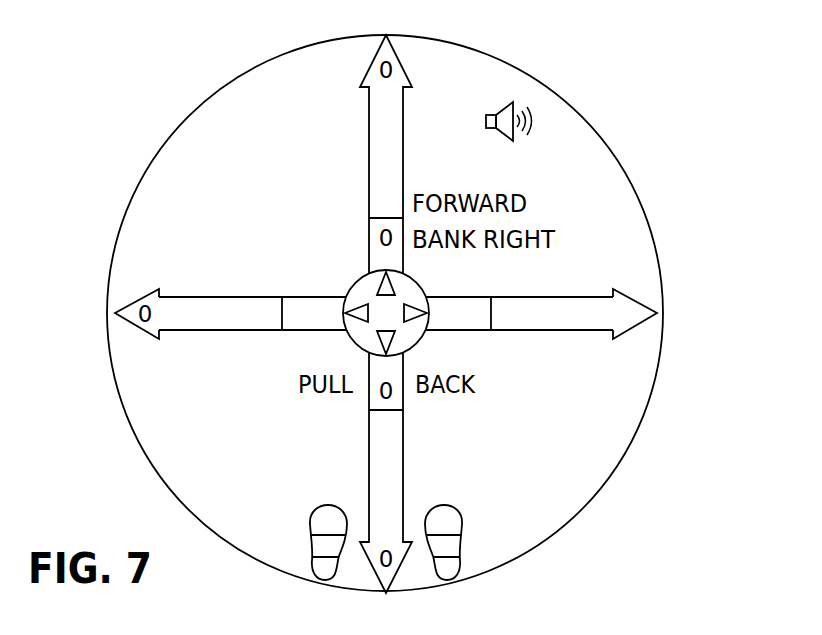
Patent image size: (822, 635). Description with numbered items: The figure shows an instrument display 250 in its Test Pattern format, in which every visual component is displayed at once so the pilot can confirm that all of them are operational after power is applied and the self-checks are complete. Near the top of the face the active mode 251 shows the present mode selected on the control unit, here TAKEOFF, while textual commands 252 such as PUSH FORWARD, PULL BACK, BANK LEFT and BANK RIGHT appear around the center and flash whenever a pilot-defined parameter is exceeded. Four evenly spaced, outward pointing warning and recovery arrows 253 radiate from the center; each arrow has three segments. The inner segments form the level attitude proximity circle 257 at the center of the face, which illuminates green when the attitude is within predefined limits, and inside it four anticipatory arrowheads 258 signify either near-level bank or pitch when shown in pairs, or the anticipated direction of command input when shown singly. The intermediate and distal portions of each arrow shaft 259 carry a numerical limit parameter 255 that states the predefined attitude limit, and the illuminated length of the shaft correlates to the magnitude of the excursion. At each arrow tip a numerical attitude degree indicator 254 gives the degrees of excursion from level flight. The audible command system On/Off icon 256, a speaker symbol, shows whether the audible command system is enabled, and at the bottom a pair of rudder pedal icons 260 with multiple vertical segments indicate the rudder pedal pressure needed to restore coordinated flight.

The instrument display 250 is at (678, 105).
The active mode 251 is at (255, 105).
The textual commands 252 is at (265, 218).
The warning and recovery arrows 253 is at (563, 350).
The numerical attitude degree indicators 254 is at (632, 290).
The numerical limit parameter 255 is at (476, 341).
The audible command system On/Off icon 256 is at (512, 90).
The level attitude proximity circle 257 is at (347, 342).
The anticipatory arrowheads 258 is at (365, 291).
The arrow shaft 259 is at (275, 342).
The rudder pedal icons 260 is at (467, 500).